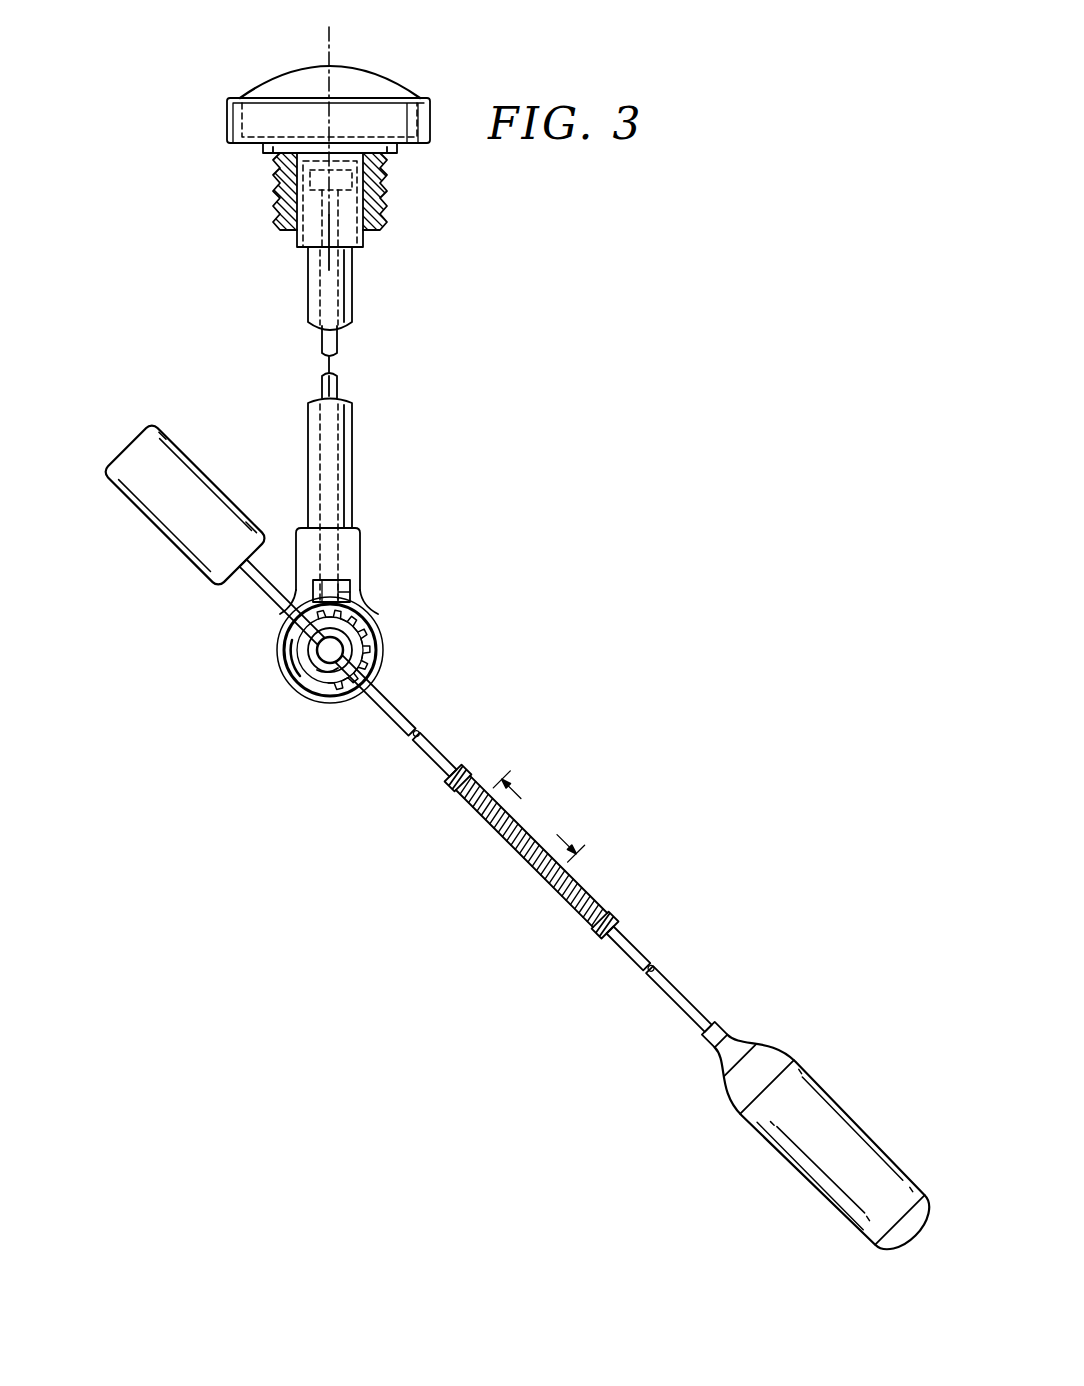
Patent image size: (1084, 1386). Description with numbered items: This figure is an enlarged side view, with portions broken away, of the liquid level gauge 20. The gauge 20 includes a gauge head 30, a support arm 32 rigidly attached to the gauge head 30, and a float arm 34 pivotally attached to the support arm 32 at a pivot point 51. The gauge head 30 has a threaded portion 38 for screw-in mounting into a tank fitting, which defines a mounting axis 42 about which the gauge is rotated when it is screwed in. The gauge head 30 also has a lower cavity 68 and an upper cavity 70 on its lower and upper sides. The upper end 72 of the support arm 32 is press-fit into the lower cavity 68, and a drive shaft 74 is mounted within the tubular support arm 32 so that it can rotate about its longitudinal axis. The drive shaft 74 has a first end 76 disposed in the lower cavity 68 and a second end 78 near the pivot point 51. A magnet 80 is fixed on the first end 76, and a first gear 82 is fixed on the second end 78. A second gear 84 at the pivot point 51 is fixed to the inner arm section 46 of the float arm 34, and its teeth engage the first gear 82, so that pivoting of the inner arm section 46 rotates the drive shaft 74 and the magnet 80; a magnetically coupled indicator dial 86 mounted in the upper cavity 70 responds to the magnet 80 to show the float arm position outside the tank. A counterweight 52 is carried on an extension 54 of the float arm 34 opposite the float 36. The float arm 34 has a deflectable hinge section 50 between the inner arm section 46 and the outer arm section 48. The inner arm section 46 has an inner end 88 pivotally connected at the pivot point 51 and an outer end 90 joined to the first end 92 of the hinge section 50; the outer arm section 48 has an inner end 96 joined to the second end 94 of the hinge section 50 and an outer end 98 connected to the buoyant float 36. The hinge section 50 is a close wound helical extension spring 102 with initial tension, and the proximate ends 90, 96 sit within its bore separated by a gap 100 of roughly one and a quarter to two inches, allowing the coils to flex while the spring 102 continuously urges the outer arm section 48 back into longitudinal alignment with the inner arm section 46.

The gauge 20 is at (553, 347).
The gauge head 30 is at (256, 151).
The support arm 32 is at (353, 463).
The float arm 34 is at (625, 793).
The float 36 is at (866, 1126).
The threaded portion 38 is at (388, 215).
The mounting axis 42 is at (325, 35).
The inner arm section 46 is at (400, 712).
The outer arm section 48 is at (681, 1009).
The hinge section 50 is at (487, 935).
The pivot point 51 is at (312, 692).
The counterweight 52 is at (161, 536).
The extension 54 is at (262, 602).
The lower cavity 68 is at (313, 257).
The upper cavity 70 is at (258, 106).
The upper end 72 is at (355, 286).
The drive shaft 74 is at (341, 385).
The first end 76 is at (300, 205).
The second end 78 is at (341, 559).
The magnet 80 is at (386, 180).
The first gear 82 is at (362, 606).
The second gear 84 is at (379, 649).
The indicator dial 86 is at (372, 67).
The inner end 88 is at (343, 706).
The outer end 90 is at (452, 757).
The first end 92 is at (450, 791).
The second end 94 is at (586, 921).
The inner end 96 is at (617, 931).
The outer end 98 is at (706, 1020).
The gap 100 is at (538, 816).
The extension spring 102 is at (522, 861).